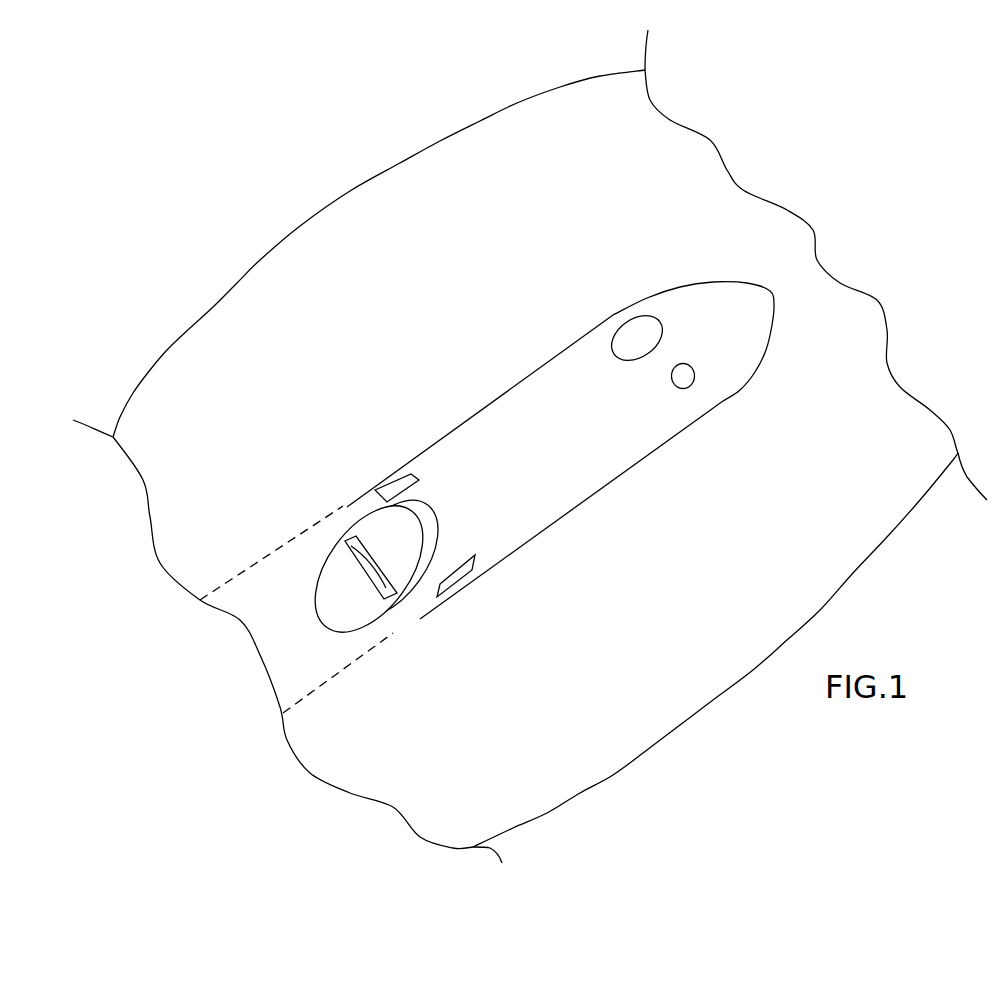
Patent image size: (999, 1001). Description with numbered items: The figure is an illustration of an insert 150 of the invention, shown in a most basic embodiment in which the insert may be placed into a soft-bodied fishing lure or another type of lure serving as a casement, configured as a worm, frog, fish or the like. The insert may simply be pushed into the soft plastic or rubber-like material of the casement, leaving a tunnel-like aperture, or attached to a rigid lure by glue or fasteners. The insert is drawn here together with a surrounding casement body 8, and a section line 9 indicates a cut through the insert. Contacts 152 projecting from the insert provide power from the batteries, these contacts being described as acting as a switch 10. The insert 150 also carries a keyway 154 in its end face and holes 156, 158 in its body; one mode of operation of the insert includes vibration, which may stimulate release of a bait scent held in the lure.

The panel 8 is at (440, 138).
The section line 9 is at (290, 545).
The switch 10 is at (543, 426).
The insert 150 is at (482, 390).
The contacts 152 is at (382, 486).
The keyway 154 is at (348, 586).
The small hole 156 is at (693, 381).
The mounting hole 158 is at (623, 330).